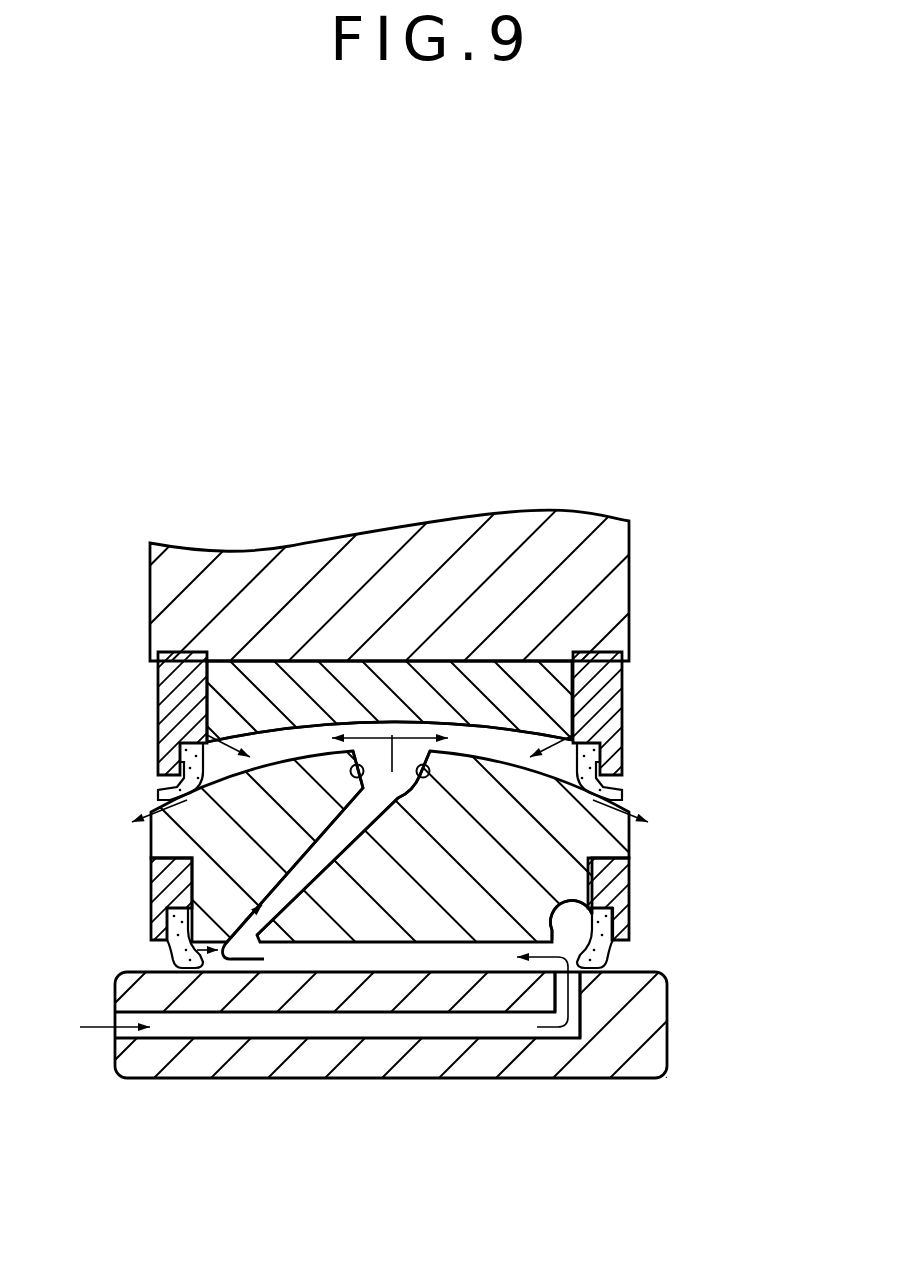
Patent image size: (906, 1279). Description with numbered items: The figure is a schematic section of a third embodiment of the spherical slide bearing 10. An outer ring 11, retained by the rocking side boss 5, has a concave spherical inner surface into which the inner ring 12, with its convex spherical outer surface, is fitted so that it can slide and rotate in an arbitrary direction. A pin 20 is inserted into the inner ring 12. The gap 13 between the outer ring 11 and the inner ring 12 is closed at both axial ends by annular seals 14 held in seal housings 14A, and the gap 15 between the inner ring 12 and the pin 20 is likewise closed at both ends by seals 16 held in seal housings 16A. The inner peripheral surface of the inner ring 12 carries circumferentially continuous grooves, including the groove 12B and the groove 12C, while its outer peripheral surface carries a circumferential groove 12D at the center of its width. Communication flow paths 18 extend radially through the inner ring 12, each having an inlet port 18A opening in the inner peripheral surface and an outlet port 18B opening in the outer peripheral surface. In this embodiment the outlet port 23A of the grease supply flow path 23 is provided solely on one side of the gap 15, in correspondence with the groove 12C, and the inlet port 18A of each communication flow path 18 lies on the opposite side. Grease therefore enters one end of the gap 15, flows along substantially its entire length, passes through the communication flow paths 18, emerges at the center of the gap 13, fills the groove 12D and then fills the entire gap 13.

The rocking side boss 5 is at (624, 548).
The spherical slide bearing 10 is at (453, 839).
The outer ring 11 is at (560, 685).
The inner ring 12 is at (630, 838).
The groove 12B is at (243, 958).
The groove 12C is at (566, 908).
The circumferential groove 12D is at (352, 763).
The gap 13 is at (210, 718).
The seal 14 is at (178, 797).
The seal housing 14A is at (158, 690).
The gap 15 is at (185, 953).
The seal 16 is at (166, 950).
The seal housing 16A is at (150, 878).
The communication flow path 18 is at (323, 850).
The inlet port 18A is at (291, 1046).
The outlet port 18B is at (424, 764).
The pin 20 is at (133, 1075).
The grease supply flow path 23 is at (402, 1042).
The outlet port 23A is at (607, 975).